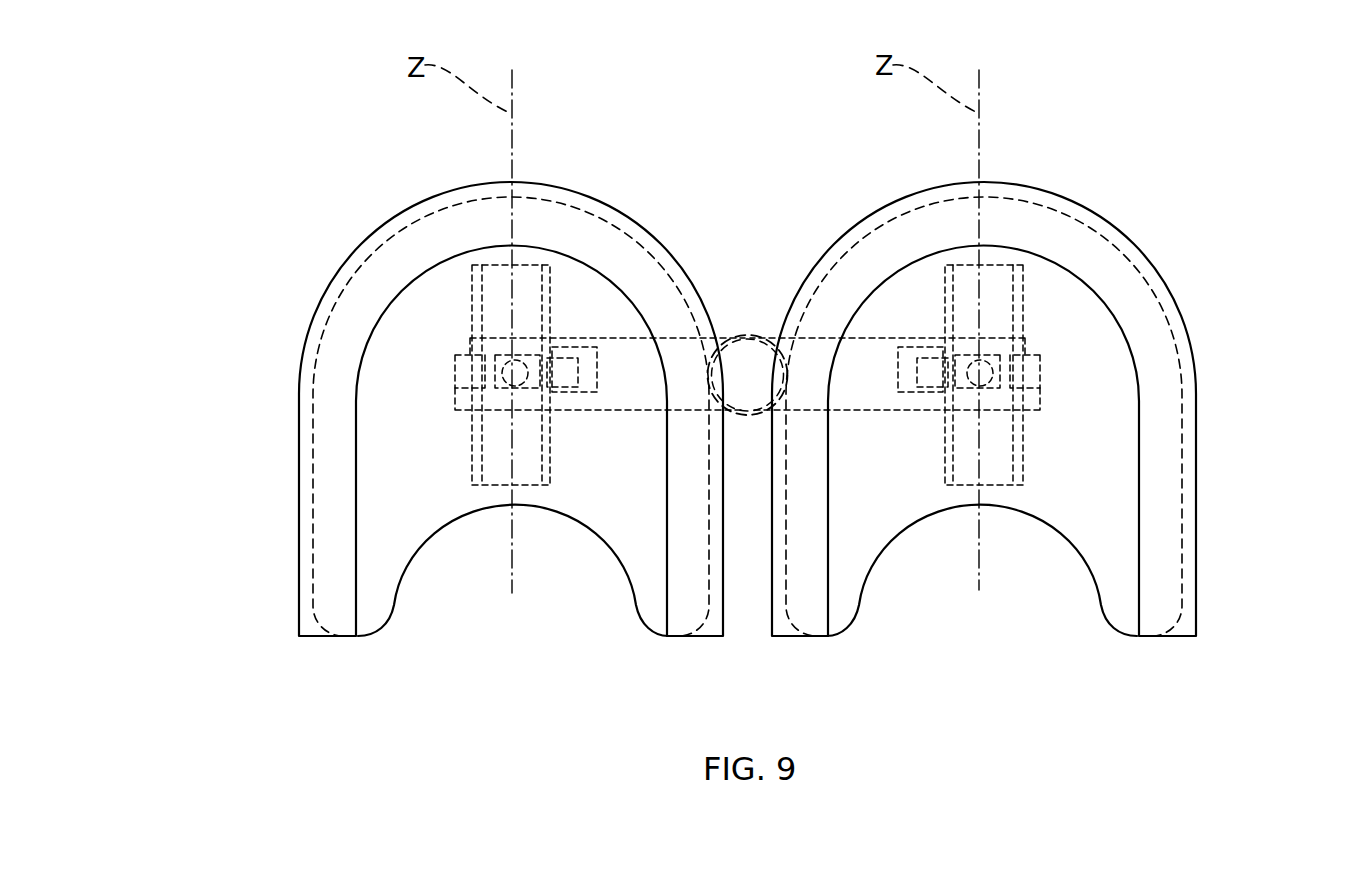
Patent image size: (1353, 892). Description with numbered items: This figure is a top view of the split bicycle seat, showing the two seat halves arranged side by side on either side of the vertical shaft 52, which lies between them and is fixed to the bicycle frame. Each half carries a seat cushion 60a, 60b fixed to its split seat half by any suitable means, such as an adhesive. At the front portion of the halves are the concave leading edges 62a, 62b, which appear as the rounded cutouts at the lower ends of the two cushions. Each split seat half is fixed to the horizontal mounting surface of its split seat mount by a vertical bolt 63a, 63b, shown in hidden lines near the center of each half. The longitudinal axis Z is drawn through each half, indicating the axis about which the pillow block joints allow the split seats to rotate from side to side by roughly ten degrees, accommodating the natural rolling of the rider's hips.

The vertical shaft 52 is at (745, 335).
The seat cushion 60a is at (299, 443).
The seat cushion 60b is at (1196, 440).
The concave leading edge 62a is at (405, 577).
The concave leading edge 62b is at (1090, 577).
The vertical bolt 63a is at (505, 367).
The vertical bolt 63b is at (990, 367).